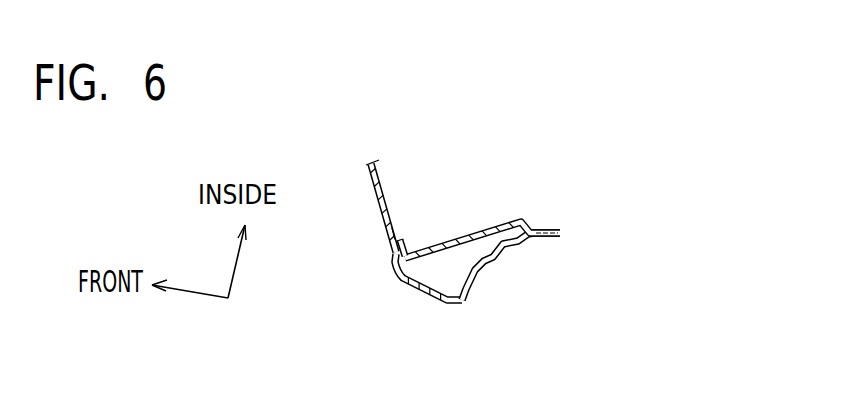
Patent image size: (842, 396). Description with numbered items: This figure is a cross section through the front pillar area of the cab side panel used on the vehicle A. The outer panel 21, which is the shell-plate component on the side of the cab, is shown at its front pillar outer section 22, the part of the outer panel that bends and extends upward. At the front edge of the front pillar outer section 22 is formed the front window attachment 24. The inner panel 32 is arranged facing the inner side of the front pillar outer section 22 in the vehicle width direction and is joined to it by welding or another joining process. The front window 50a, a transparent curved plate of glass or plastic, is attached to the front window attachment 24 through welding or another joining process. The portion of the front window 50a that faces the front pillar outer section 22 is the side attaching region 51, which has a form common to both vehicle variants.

The front window 50a is at (366, 174).
The side attaching region 51 is at (387, 249).
The front window attachment 24 is at (400, 239).
The inner panel 32 is at (481, 226).
The front pillar outer section 22 is at (442, 300).
The outer panel 21 is at (476, 289).
The vehicle A is at (607, 291).